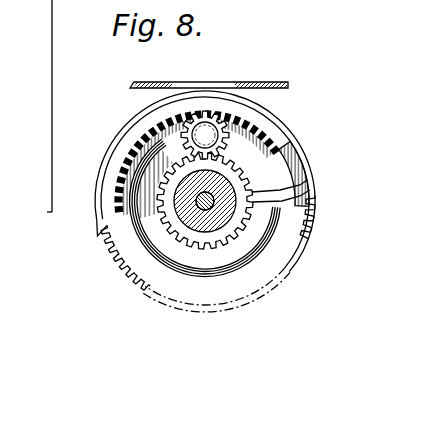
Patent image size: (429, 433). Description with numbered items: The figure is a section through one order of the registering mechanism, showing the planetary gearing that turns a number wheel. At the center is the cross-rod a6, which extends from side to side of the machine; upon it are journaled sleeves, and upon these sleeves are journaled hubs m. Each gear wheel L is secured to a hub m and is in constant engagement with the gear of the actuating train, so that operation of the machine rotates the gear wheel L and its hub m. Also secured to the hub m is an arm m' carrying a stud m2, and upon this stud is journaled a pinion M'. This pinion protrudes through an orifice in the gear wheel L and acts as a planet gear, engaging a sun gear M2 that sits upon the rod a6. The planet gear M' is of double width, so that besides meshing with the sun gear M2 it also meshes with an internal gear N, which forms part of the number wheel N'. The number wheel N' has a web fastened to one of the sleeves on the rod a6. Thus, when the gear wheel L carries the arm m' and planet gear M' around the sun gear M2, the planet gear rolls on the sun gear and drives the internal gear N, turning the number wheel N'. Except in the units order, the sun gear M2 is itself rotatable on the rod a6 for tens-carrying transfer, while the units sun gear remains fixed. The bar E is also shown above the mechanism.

The supporting bar E is at (144, 72).
The internal gear N is at (177, 152).
The number wheel N' is at (185, 190).
The gear wheel L is at (283, 260).
The pinion M' is at (262, 176).
The sun gear M2 is at (250, 193).
The hub m is at (255, 202).
The cross-rod a6 is at (203, 208).
The stud m2 is at (247, 128).
The arm m' is at (270, 133).